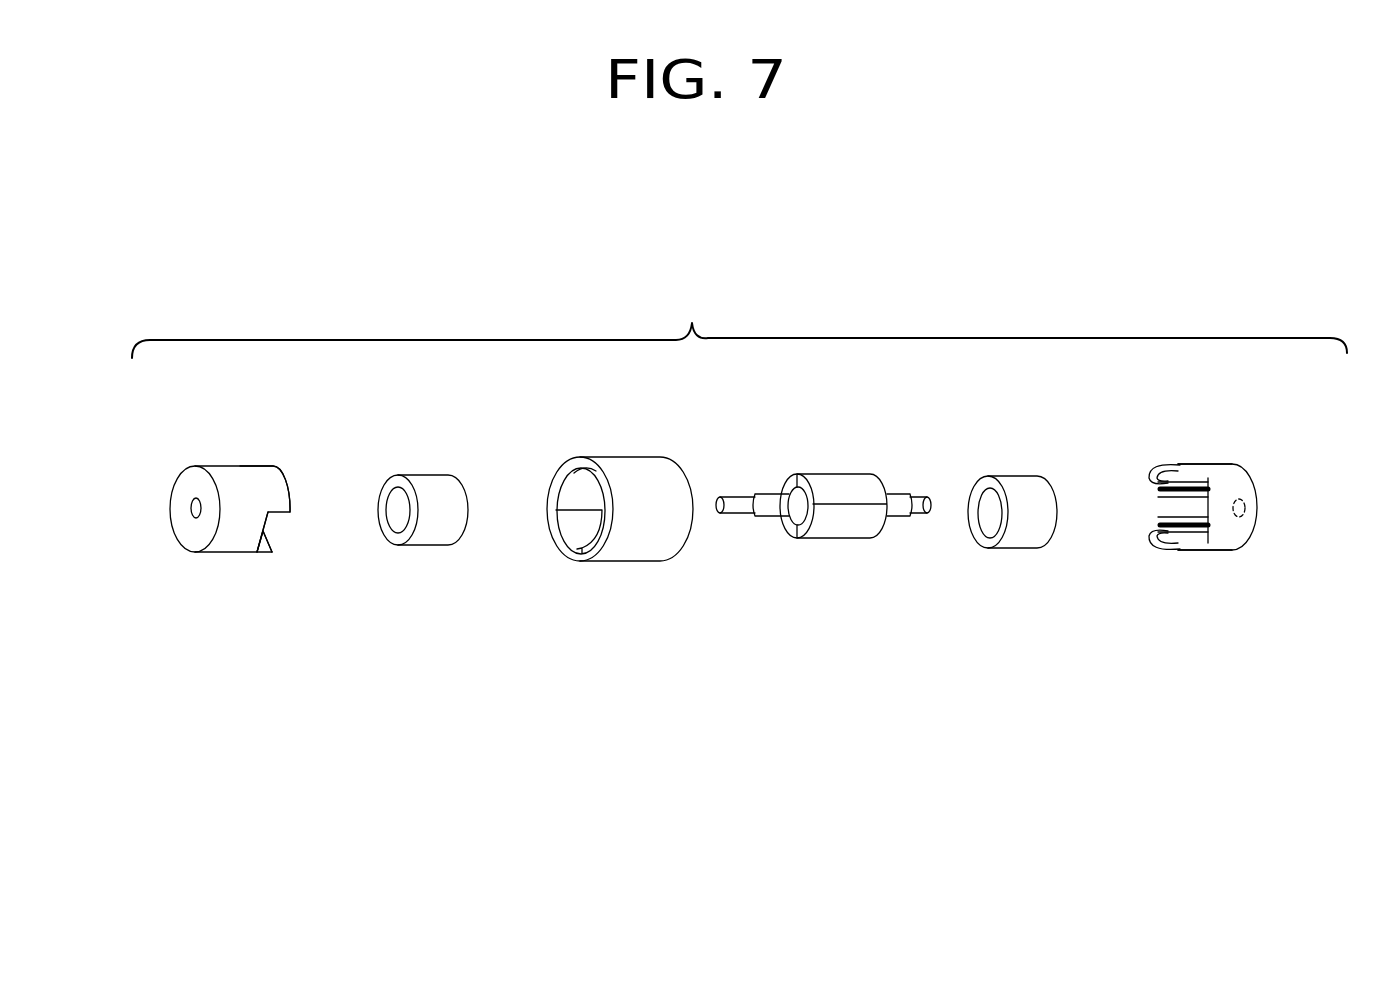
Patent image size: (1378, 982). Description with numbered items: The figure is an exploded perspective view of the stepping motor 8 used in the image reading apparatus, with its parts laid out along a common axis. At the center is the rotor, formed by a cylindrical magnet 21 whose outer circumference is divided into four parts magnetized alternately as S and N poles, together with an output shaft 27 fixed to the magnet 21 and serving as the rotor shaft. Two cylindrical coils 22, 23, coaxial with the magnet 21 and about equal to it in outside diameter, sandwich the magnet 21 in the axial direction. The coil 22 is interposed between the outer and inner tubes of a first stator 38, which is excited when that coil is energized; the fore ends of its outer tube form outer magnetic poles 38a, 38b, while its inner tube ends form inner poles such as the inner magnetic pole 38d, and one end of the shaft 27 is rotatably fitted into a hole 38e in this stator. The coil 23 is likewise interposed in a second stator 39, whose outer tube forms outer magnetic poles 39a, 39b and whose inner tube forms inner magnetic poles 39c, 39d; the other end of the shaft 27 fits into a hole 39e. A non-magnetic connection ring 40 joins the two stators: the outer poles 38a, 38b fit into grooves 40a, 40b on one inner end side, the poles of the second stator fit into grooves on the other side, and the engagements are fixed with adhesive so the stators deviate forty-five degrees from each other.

The stepping motor 8 is at (739, 318).
The first stator 38 is at (227, 475).
The outer magnetic pole 38a is at (273, 475).
The outer magnetic pole 38b is at (259, 555).
The inner magnetic pole 38d is at (264, 533).
The hole 38e is at (188, 507).
The coil 22 is at (428, 485).
The connection ring 40 is at (657, 470).
The groove 40a is at (593, 470).
The groove 40b is at (572, 537).
The magnet 21 is at (850, 473).
The output shaft 27 is at (773, 508).
The coil 23 is at (1020, 477).
The second stator 39 is at (1242, 482).
The outer magnetic pole 39a is at (1197, 470).
The outer magnetic pole 39b is at (1190, 547).
The inner magnetic pole 39c is at (1150, 493).
The inner magnetic pole 39d is at (1150, 523).
The hole 39e is at (1253, 533).